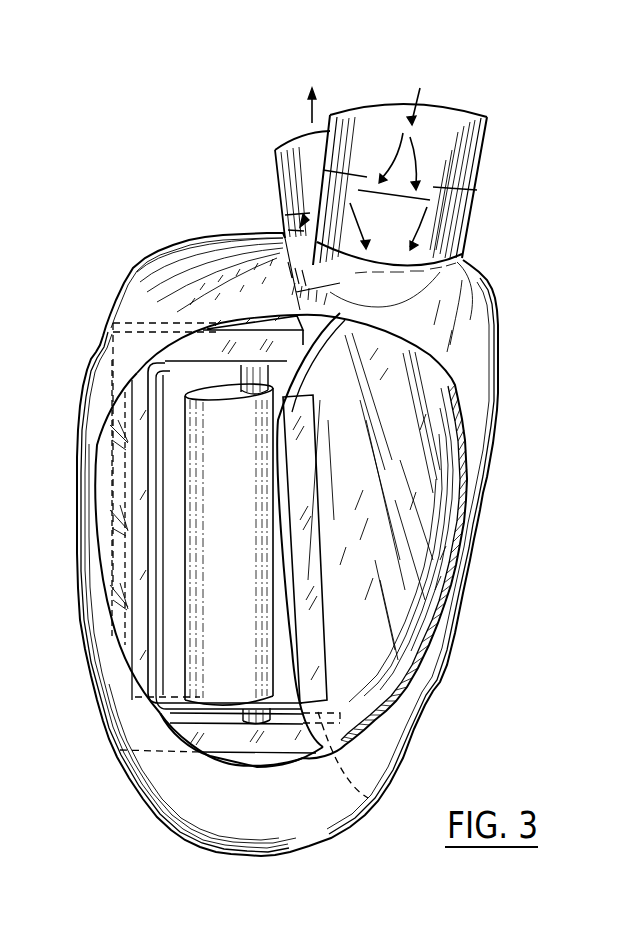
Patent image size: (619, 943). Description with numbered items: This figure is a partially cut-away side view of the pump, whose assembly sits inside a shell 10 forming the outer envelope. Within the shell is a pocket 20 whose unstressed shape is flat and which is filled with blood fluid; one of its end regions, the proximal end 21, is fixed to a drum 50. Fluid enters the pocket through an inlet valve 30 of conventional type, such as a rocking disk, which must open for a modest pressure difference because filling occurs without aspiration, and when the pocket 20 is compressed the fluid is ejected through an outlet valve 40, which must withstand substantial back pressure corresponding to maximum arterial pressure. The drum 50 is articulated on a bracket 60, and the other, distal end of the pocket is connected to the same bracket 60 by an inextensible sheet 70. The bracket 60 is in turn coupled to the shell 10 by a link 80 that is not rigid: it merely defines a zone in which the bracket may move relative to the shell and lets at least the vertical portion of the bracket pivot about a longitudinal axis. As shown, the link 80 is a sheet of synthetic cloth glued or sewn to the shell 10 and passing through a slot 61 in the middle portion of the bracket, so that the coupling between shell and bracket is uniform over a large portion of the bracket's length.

The shell 10 is at (438, 622).
The pocket 20 is at (393, 441).
The proximal end 21 is at (290, 518).
The inlet valve 30 is at (410, 200).
The outlet valve 40 is at (310, 200).
The drum 50 is at (213, 598).
The bracket 60 is at (130, 353).
The slot 61 is at (100, 443).
The inextensible sheet 70 is at (193, 375).
The link 80 is at (123, 683).